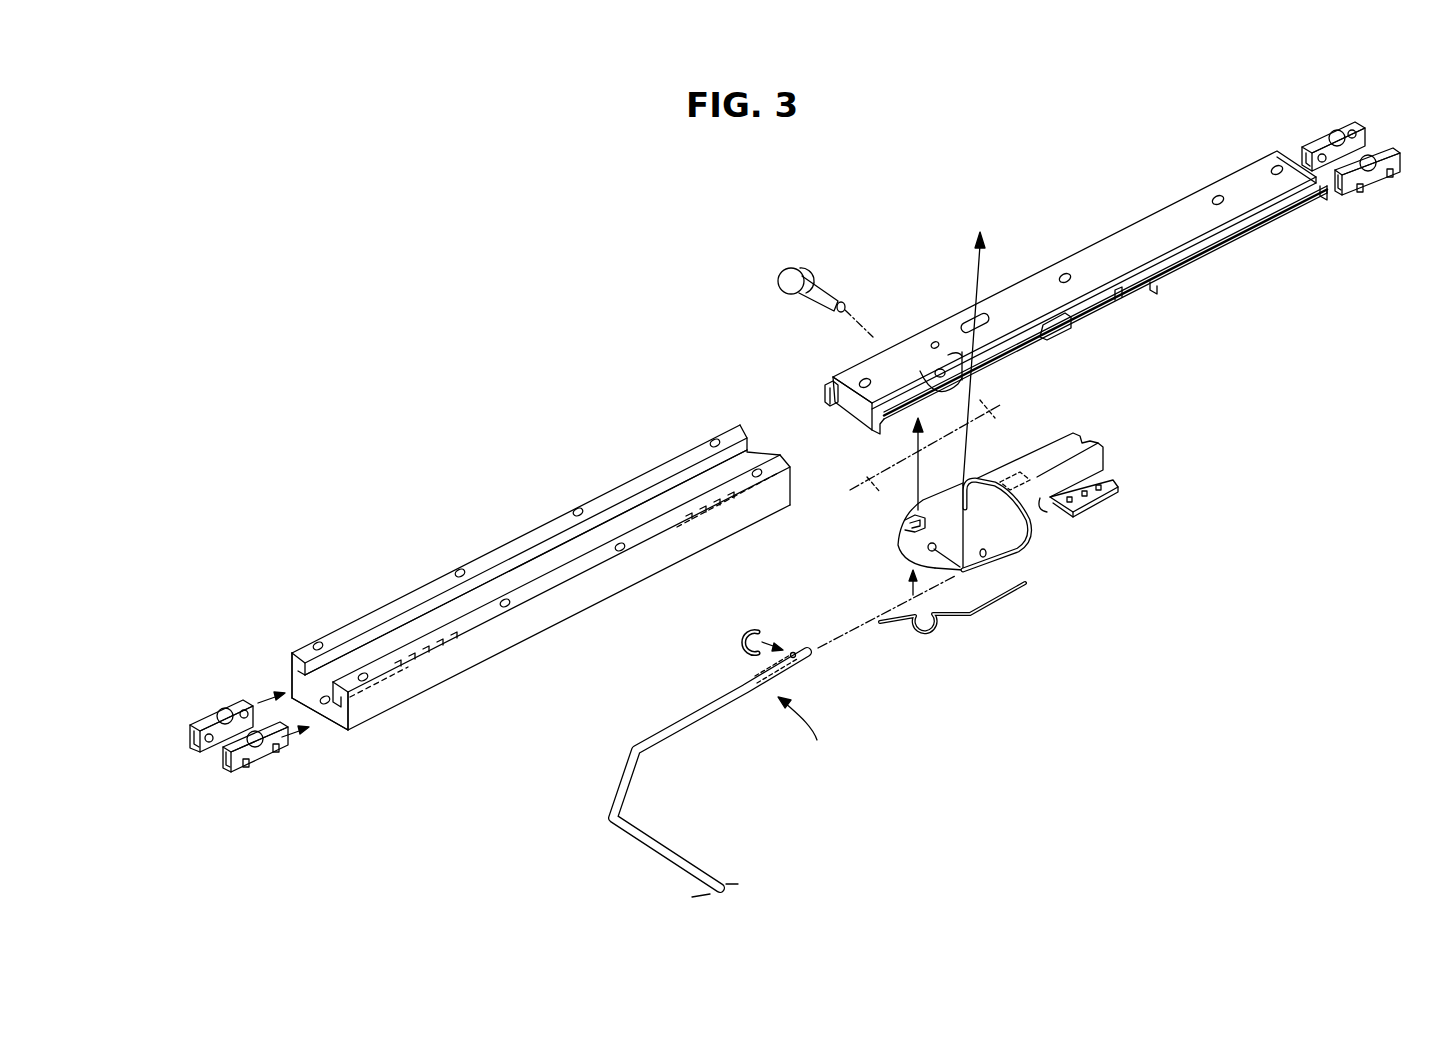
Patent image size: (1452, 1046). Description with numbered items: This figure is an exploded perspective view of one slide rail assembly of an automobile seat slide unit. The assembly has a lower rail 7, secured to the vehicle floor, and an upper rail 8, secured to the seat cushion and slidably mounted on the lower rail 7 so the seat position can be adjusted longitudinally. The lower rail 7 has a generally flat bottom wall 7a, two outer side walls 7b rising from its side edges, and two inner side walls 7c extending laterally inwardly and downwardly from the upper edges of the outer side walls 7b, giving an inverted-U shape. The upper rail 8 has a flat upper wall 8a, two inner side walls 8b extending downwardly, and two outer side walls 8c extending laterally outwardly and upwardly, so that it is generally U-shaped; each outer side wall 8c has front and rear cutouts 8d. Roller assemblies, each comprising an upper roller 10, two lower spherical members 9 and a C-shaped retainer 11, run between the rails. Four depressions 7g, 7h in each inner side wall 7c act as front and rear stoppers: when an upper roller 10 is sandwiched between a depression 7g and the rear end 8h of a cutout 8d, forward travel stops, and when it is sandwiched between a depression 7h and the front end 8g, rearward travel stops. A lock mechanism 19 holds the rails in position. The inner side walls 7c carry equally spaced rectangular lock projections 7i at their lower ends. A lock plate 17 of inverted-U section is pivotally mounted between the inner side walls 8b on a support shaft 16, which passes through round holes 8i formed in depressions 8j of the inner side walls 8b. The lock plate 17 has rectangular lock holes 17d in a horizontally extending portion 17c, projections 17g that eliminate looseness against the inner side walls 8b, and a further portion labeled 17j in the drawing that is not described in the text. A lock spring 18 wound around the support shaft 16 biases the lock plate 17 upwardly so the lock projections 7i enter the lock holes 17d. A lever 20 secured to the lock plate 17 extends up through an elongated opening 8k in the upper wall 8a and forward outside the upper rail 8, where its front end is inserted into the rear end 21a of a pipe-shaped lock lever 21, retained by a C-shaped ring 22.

The lower rail 7 is at (521, 535).
The bottom wall 7a is at (321, 724).
The outer side walls 7b is at (291, 652).
The inner side walls 7c is at (400, 620).
The depressions 7g is at (318, 643).
The depressions 7h is at (459, 570).
The lock projections 7i is at (425, 650).
The upper rail 8 is at (1153, 220).
The upper wall 8a is at (877, 369).
The inner side walls 8b is at (837, 403).
The outer side walls 8c is at (825, 390).
The cutouts 8d is at (1010, 362).
The front ends of cutouts 8g is at (894, 419).
The rear ends of cutouts 8h is at (1050, 340).
The round hole 8i is at (927, 367).
The depression 8j is at (939, 368).
The elongated opening 8k is at (983, 319).
The lower spherical members 9 is at (247, 773).
The upper roller 10 is at (280, 750).
The retainer 11 is at (186, 746).
The support shaft 16 is at (820, 290).
The lock plate 17 is at (1100, 465).
The horizontally extending portion 17c is at (1108, 499).
The lock holes 17d is at (1114, 482).
The projections 17g is at (1041, 509).
The pivot lug 17j is at (900, 546).
The lock spring 18 is at (998, 603).
The lock mechanism 19 is at (804, 732).
The lever 20 is at (1021, 548).
The lock lever 21 is at (701, 868).
The rear end of lock lever 21a is at (811, 672).
The C-shaped ring 22 is at (742, 637).